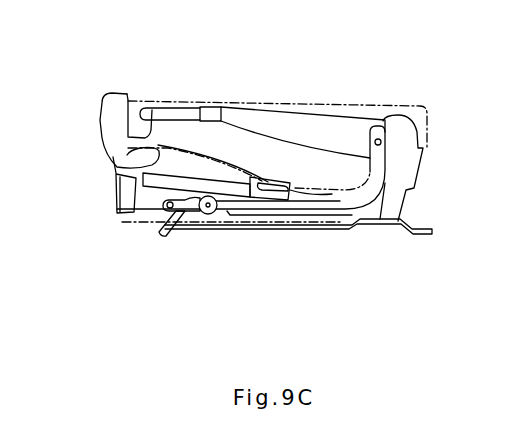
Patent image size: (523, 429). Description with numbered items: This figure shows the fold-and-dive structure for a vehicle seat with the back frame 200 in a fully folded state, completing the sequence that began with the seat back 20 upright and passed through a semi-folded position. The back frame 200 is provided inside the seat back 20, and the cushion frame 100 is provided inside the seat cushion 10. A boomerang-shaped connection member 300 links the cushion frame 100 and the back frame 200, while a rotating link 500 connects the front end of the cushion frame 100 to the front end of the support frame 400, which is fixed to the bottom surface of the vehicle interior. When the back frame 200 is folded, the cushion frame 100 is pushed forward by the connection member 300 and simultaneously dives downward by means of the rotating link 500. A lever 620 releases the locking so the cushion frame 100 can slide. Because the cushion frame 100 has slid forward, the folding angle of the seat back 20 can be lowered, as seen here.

The seat cushion 10 is at (223, 108).
The seat back 20 is at (178, 102).
The cushion frame 100 is at (158, 184).
The back frame 200 is at (300, 128).
The connection member 300 is at (372, 168).
The support frame 400 is at (303, 220).
The rotating link 500 is at (187, 205).
The lever 620 is at (116, 192).